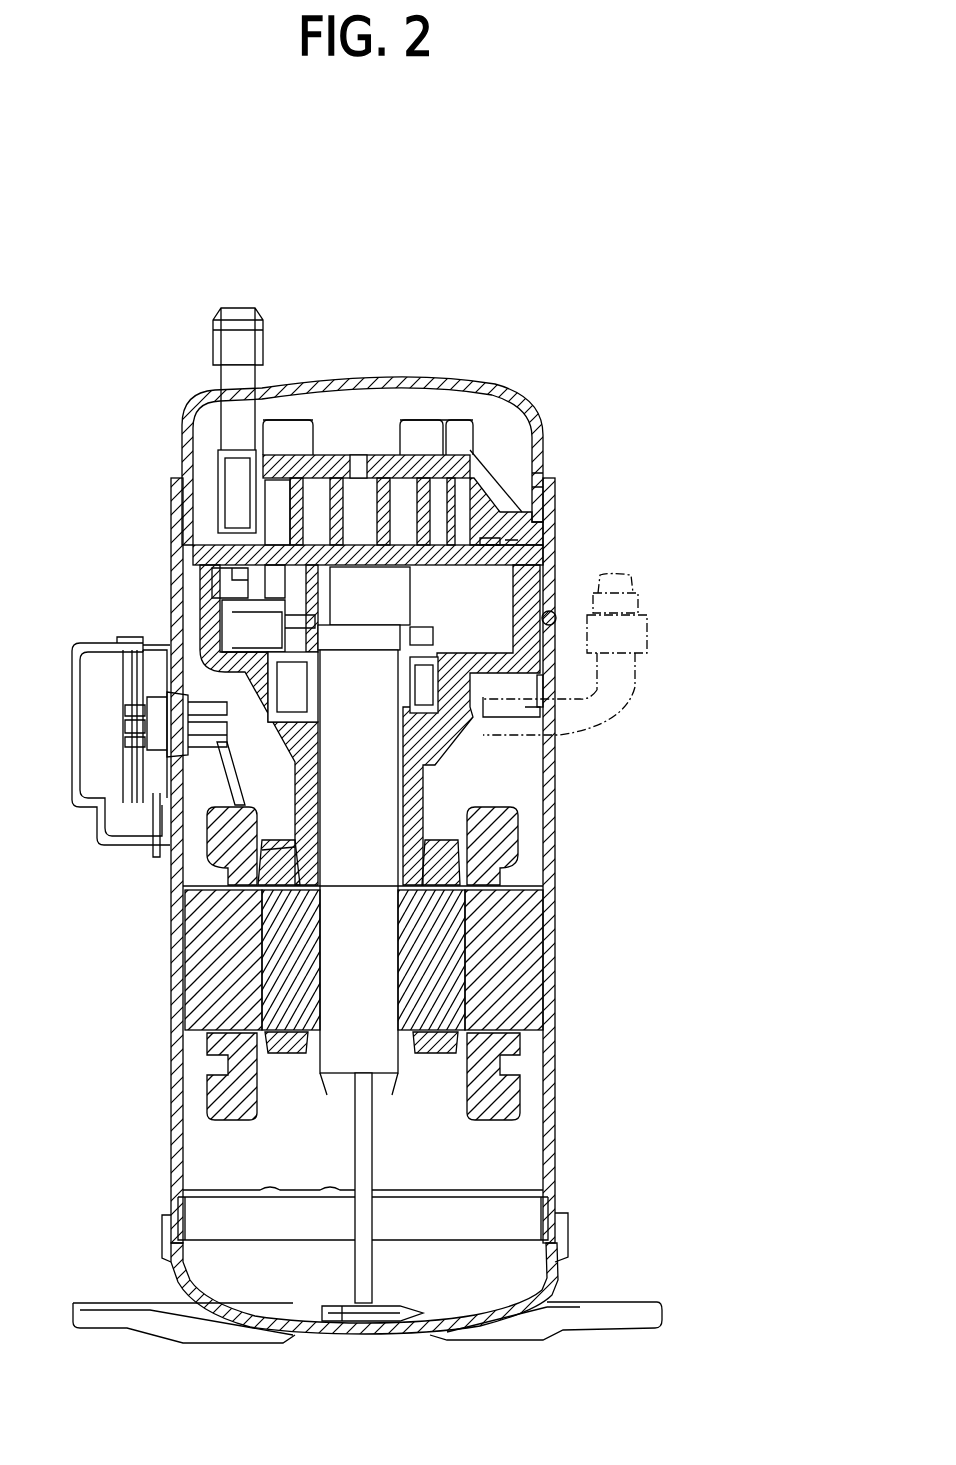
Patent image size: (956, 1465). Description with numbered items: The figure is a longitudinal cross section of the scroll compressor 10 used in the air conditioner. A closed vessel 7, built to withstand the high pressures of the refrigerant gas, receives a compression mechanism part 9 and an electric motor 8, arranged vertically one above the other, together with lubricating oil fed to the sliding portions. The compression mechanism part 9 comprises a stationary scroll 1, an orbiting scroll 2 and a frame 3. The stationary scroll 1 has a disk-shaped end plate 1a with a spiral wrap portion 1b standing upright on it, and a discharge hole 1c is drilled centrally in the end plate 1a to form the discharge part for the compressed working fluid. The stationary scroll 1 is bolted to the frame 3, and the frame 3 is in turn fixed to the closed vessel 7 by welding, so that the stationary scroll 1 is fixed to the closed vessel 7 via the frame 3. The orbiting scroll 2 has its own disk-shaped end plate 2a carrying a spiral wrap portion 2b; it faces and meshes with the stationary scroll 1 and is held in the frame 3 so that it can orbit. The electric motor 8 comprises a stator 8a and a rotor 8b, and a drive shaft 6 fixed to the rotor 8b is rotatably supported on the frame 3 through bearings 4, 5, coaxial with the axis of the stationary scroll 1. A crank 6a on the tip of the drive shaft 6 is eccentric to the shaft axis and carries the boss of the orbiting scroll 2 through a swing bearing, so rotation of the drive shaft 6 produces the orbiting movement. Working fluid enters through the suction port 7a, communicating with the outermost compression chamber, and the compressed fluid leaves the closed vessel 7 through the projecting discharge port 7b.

The stationary scroll 1 is at (497, 468).
The end plate 1a is at (473, 451).
The wrap portion 1b is at (308, 525).
The discharge hole 1c is at (360, 460).
The orbiting scroll 2 is at (257, 558).
The end plate 2a is at (212, 555).
The wrap portion 2b is at (280, 503).
The frame 3 is at (212, 622).
The bearing 4 is at (560, 702).
The bearing 5 is at (262, 850).
The drive shaft 6 is at (387, 773).
The crank 6a is at (500, 560).
The closed vessel 7 is at (557, 1062).
The suction port 7a is at (235, 345).
The discharge port 7b is at (623, 602).
The electric motor 8 is at (523, 855).
The stator 8a is at (520, 935).
The rotor 8b is at (447, 918).
The compression mechanism part 9 is at (417, 424).
The compressor 10 is at (515, 345).